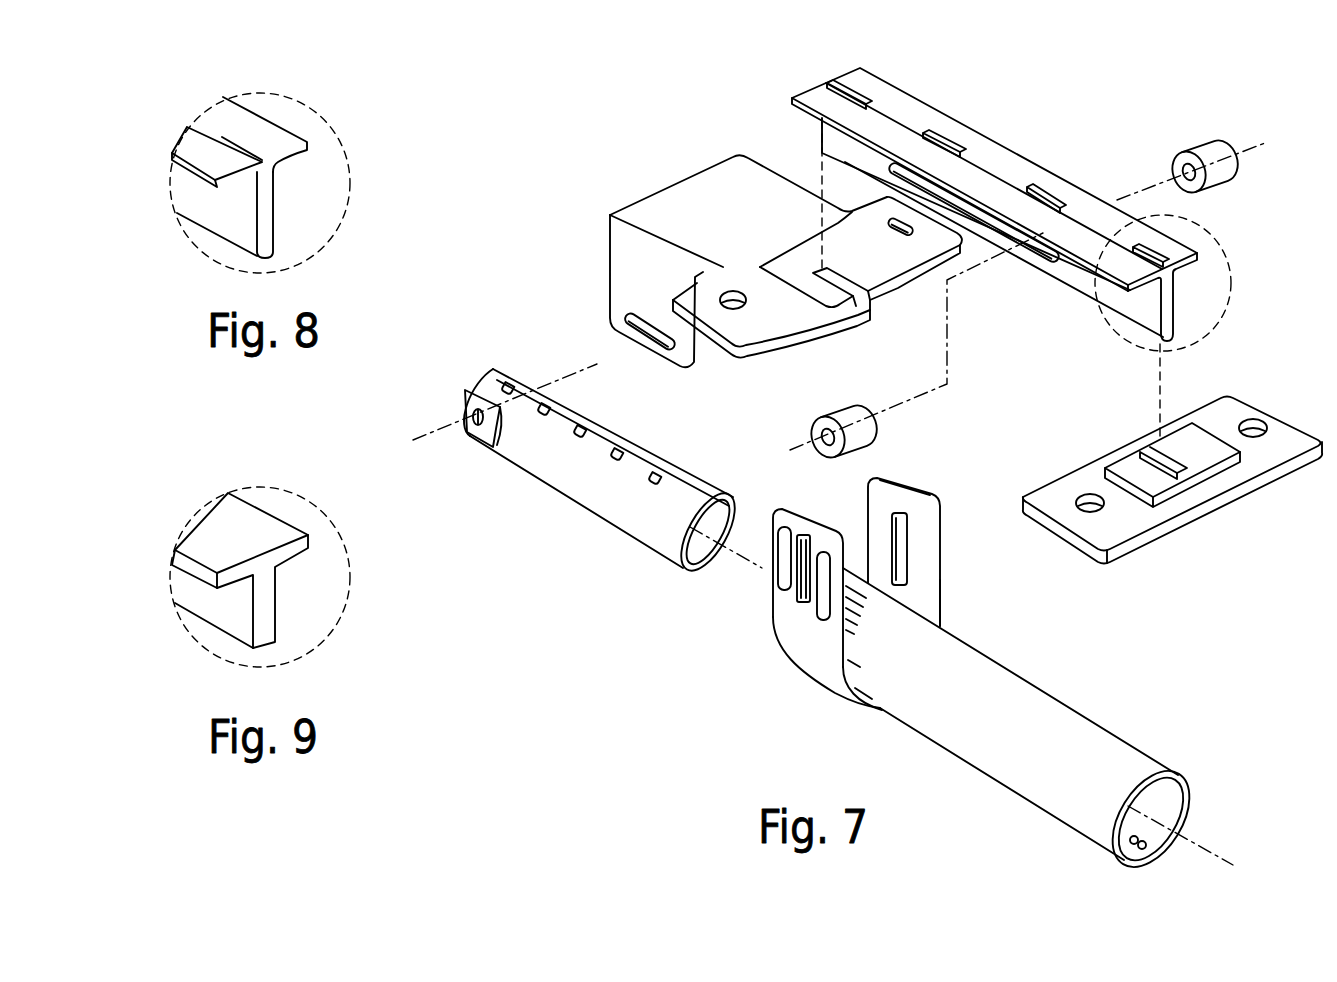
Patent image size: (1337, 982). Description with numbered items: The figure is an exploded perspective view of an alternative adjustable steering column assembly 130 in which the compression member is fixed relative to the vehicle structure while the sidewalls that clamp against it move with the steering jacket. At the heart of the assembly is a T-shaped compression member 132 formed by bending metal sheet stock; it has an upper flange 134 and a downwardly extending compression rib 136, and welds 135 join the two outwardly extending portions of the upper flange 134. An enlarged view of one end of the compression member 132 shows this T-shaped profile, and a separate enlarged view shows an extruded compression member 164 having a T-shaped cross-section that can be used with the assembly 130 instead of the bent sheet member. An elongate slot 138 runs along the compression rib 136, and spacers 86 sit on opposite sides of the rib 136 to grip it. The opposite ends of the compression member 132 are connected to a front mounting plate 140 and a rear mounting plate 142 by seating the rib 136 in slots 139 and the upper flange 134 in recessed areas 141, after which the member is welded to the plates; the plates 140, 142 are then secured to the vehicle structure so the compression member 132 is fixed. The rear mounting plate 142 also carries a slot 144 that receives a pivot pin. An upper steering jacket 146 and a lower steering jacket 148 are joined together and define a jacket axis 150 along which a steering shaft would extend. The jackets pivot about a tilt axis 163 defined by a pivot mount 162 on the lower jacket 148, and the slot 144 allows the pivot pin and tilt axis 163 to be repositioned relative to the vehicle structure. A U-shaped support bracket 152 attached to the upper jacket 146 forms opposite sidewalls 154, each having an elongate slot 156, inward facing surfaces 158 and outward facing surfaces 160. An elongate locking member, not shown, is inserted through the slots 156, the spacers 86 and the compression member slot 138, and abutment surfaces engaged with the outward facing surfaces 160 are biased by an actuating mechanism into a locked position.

In FIG. 7, the spacers 86 is at (1205, 149).
In FIG. 7, the adjustable steering column assembly 130 is at (813, 68).
In FIG. 7, the T-shaped compression member 132 is at (963, 131).
In FIG. 8, the T-shaped compression member 132 is at (262, 130).
In FIG. 7, the upper flange 134 is at (903, 102).
In FIG. 8, the upper flange 134 is at (290, 137).
In FIG. 7, the welds 135 is at (1050, 190).
In FIG. 7, the compression rib 136 is at (1072, 284).
In FIG. 8, the compression rib 136 is at (215, 210).
In FIG. 7, the elongate slot 138 is at (1000, 224).
In FIG. 7, the slots 139 is at (872, 312).
In FIG. 7, the mounting plate 140 is at (1273, 472).
In FIG. 7, the recessed areas 141 is at (787, 275).
In FIG. 7, the rear mounting plate 142 is at (663, 203).
In FIG. 7, the slot 144 is at (622, 327).
In FIG. 7, the upper steering jacket 146 is at (1016, 795).
In FIG. 7, the lower steering jacket 148 is at (613, 517).
In FIG. 7, the jacket axis 150 is at (1223, 853).
In FIG. 7, the U-shaped support bracket 152 is at (794, 648).
In FIG. 7, the sidewalls 154 is at (783, 518).
In FIG. 7, the elongate slot 156 is at (893, 532).
In FIG. 7, the inward facing surfaces 158 is at (917, 518).
In FIG. 7, the outward facing surfaces 160 is at (947, 597).
In FIG. 7, the pivot mount 162 is at (463, 402).
In FIG. 7, the tilt axis 163 is at (423, 441).
In FIG. 9, the extruded compression member 164 is at (288, 553).